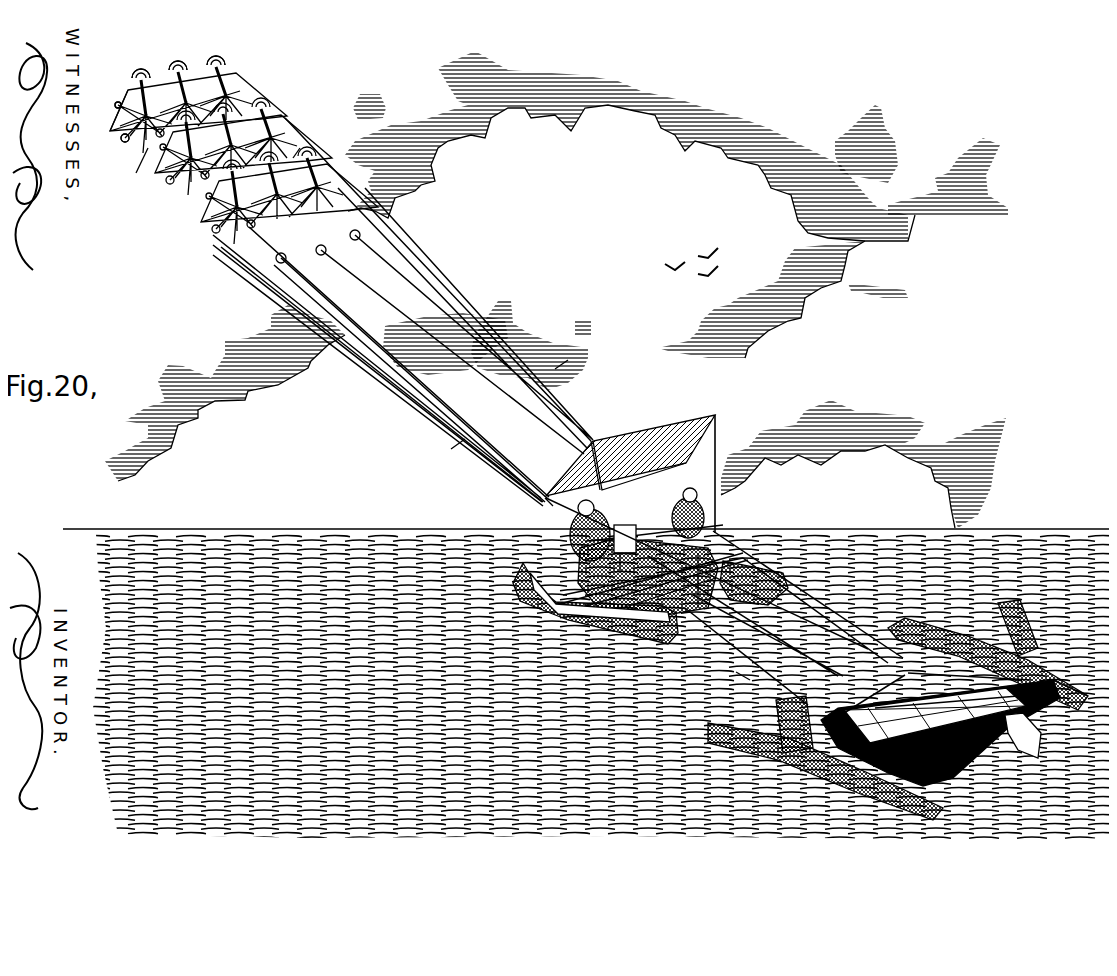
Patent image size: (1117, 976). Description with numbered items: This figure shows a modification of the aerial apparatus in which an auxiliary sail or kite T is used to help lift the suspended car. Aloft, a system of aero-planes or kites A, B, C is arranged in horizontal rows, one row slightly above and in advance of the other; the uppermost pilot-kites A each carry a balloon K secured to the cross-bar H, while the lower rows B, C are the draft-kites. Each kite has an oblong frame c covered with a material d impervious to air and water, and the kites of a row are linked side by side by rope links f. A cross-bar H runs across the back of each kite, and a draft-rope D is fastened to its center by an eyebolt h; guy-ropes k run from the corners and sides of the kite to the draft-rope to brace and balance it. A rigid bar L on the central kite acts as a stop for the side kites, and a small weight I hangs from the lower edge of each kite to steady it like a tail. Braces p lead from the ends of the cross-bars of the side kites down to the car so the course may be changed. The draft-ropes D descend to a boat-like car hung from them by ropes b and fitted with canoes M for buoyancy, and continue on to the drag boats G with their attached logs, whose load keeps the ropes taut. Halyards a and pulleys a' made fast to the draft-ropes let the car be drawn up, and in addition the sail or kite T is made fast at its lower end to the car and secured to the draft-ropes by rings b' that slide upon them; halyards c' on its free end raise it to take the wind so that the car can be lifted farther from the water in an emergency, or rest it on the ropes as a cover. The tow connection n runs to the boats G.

The pilot-kites A is at (226, 66).
The draft-kites B is at (277, 113).
The draft-kites C is at (318, 163).
The draft-ropes D is at (480, 452).
The boats G is at (898, 710).
The cross-bar H is at (137, 170).
The weight I is at (135, 170).
The balloon K is at (215, 57).
The rigid bar L is at (148, 143).
The canoes M is at (778, 537).
The sail or kite T is at (634, 432).
The halyards a is at (382, 374).
The pulleys a' is at (305, 253).
The ropes b is at (652, 554).
The rings b' is at (609, 482).
The frame c is at (364, 287).
The halyards c' is at (728, 474).
The covering d is at (209, 131).
The rope links f is at (284, 191).
The eyebolt h is at (625, 539).
The guy-rope k is at (274, 145).
The tow ropes n is at (765, 612).
The braces p is at (350, 307).